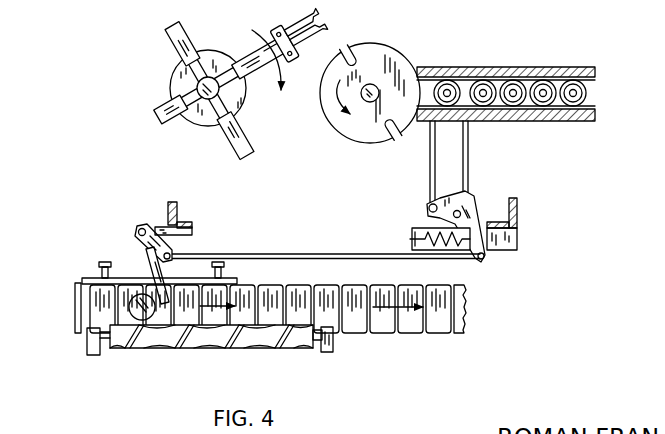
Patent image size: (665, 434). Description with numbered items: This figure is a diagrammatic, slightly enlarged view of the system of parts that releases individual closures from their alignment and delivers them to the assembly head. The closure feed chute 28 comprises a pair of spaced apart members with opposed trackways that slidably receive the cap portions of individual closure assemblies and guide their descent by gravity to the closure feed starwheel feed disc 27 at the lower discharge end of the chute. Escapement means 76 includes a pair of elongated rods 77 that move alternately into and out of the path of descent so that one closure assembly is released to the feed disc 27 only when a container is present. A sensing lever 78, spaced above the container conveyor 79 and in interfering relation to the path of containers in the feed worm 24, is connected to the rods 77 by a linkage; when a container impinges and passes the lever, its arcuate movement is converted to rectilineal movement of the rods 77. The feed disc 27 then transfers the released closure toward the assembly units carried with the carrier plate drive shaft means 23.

The carrier plate drive shaft means 23 is at (197, 87).
The timing worm 24 is at (187, 343).
The closure feed starwheel disc 27 is at (373, 48).
The closure assembly feed chute means 28 is at (488, 67).
The escapement means 76 is at (470, 194).
The elongated rods 77 is at (430, 172).
The sensing lever 78 is at (140, 347).
The conveyor 79 is at (432, 328).